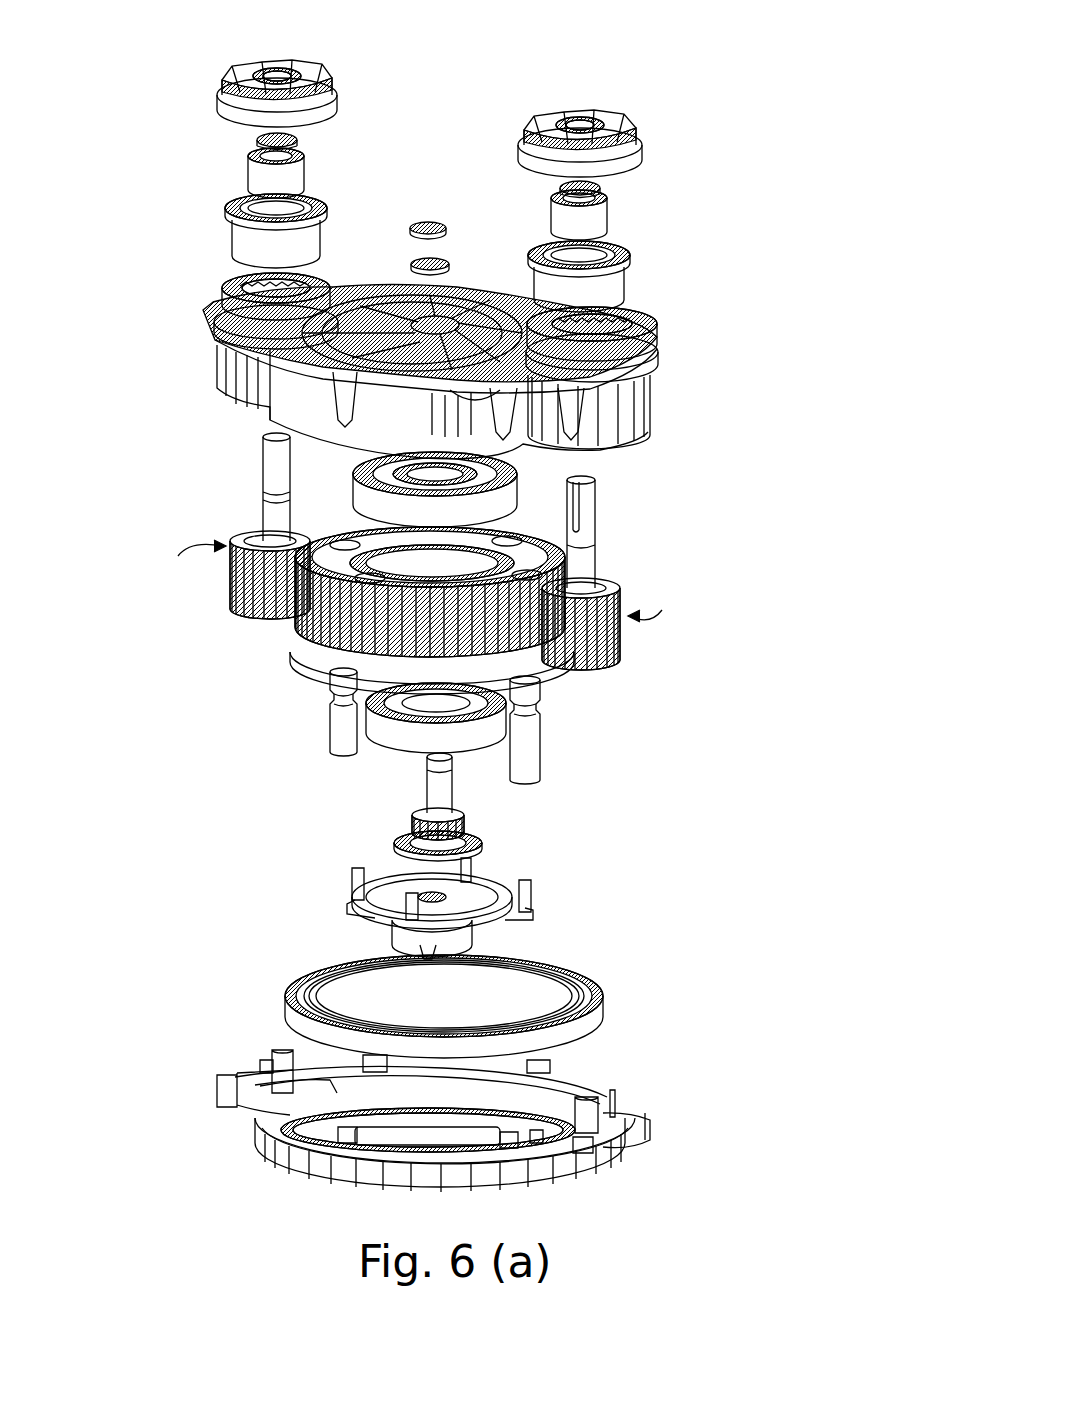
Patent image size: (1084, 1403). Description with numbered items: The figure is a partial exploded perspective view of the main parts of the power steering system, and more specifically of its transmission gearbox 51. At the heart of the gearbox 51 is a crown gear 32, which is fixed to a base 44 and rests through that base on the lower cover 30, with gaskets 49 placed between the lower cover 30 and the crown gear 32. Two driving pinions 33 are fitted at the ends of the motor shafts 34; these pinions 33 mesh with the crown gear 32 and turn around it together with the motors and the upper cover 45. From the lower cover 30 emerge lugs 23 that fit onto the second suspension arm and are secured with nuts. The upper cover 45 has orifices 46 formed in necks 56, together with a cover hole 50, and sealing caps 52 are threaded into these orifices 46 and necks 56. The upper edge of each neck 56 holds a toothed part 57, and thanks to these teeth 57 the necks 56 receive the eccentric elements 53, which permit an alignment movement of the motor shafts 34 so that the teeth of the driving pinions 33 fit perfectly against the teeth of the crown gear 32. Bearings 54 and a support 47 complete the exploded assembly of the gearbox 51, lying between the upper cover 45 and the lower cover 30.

The lugs 23 is at (337, 727).
The lower cover 30 is at (338, 1170).
The crown gear 32 is at (300, 637).
The driving pinions 33 is at (230, 580).
The pinion shaft 34 is at (585, 527).
The crown gear base 44 is at (312, 667).
The upper cover 45 is at (378, 292).
The orifices 46 is at (245, 280).
The support 47 is at (432, 787).
The gaskets 49 is at (590, 1015).
The cover hole 50 is at (450, 292).
The transmission gearbox 51 is at (430, 309).
The sealing caps 52 is at (255, 72).
The eccentric elements 53 is at (232, 215).
The bearings 54 is at (255, 170).
The necks 56 is at (210, 303).
The toothed parts 57 is at (238, 305).